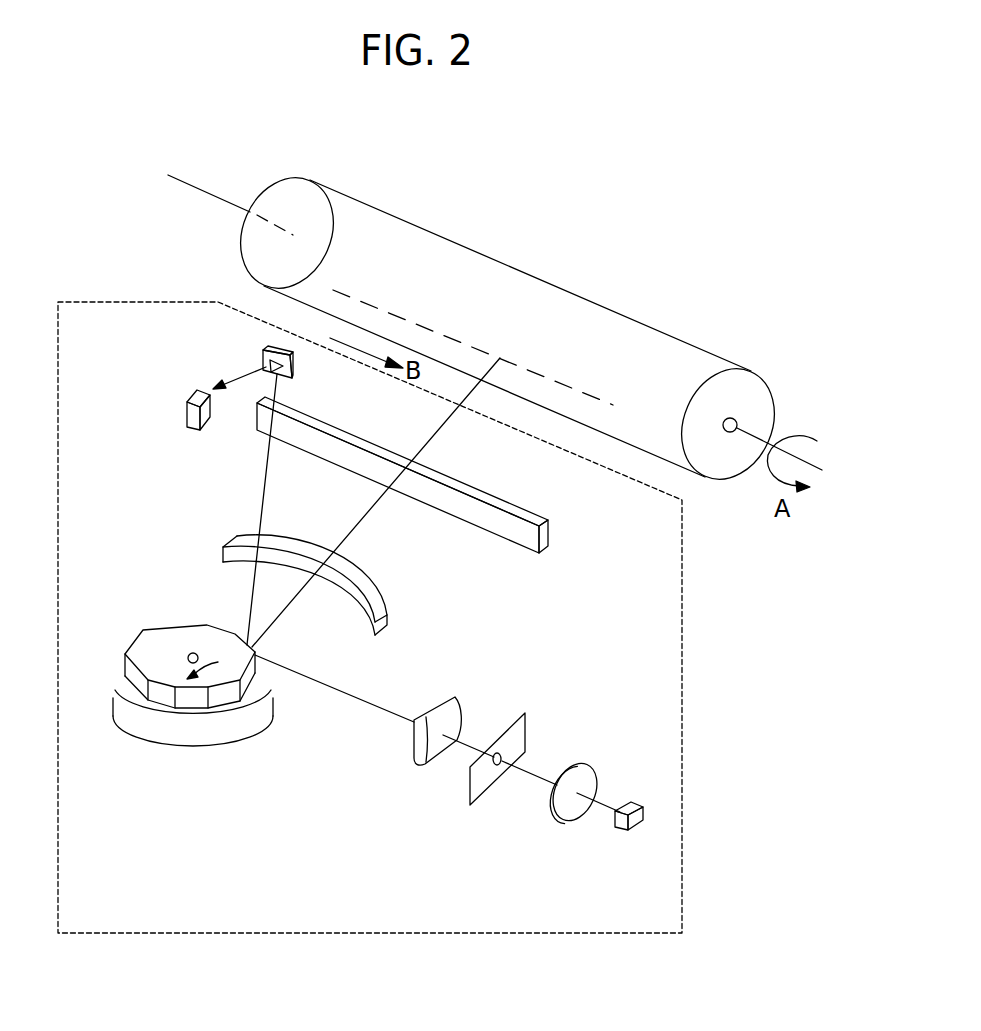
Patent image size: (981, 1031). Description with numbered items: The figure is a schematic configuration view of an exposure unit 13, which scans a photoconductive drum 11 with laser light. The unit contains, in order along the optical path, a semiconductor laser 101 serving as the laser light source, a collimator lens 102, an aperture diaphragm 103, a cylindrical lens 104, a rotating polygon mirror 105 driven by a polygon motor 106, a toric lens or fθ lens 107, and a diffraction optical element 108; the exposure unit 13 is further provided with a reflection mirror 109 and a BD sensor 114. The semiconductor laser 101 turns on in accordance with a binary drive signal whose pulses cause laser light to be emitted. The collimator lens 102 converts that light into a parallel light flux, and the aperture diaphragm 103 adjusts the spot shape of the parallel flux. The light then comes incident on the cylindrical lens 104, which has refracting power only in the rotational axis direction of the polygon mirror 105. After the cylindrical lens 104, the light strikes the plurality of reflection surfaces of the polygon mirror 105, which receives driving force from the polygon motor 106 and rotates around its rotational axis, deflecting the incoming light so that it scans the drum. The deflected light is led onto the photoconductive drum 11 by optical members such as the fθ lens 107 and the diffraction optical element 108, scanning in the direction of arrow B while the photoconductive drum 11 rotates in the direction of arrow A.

The photoconductive drum 11 is at (608, 322).
The exposure unit 13 is at (683, 848).
The semiconductor laser 101 is at (635, 820).
The collimator lens 102 is at (583, 777).
The aperture diaphragm 103 is at (487, 783).
The cylindrical lens 104 is at (443, 693).
The polygon mirror 105 is at (162, 640).
The polygon motor 106 is at (141, 724).
The toric lens (fθ lens) 107 is at (372, 605).
The diffraction optical element 108 is at (547, 537).
The reflection mirror 109 is at (262, 352).
The BD sensor 114 is at (190, 432).